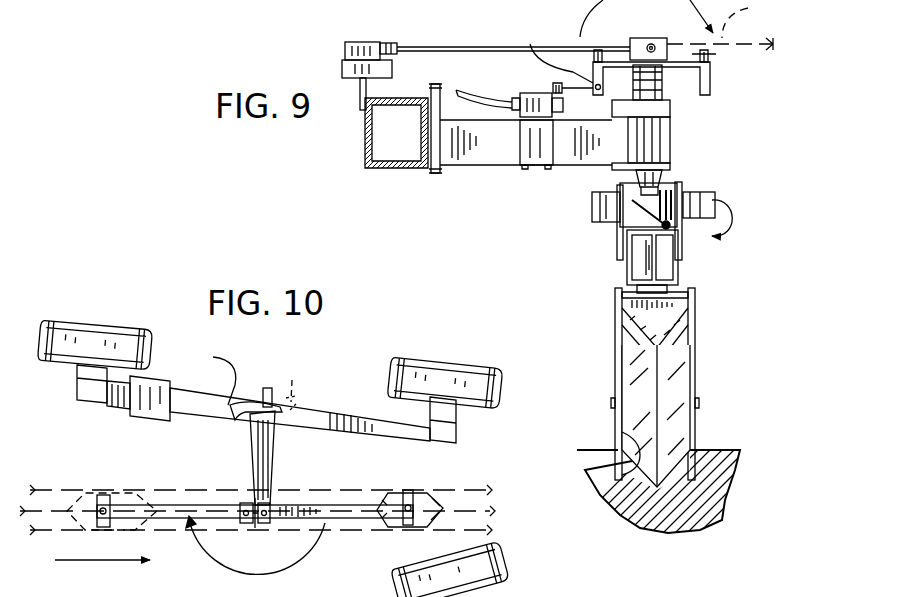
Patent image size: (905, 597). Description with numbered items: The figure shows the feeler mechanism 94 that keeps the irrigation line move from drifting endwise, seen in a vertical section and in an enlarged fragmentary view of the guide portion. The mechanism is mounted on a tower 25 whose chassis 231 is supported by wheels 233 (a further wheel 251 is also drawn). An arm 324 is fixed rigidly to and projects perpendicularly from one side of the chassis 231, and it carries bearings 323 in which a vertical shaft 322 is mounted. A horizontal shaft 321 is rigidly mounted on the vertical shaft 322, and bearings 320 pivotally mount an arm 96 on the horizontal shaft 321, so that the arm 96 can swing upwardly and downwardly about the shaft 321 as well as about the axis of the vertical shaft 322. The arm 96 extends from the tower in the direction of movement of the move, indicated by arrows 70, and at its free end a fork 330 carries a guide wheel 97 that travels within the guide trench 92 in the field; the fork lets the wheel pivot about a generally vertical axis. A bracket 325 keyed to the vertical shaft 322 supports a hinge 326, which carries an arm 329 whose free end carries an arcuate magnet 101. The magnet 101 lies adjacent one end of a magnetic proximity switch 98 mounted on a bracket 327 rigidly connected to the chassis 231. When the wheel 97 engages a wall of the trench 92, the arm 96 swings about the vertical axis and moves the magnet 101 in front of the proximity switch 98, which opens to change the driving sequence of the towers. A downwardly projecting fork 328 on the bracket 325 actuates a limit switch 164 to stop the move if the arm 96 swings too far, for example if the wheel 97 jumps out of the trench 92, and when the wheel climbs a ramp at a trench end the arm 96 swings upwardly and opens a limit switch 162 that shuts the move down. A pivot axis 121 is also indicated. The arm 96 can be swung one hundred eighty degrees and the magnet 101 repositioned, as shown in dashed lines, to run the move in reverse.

In FIG. 9, the tower 25 is at (360, 143).
In FIG. 10, the tower 25 is at (102, 412).
In FIG. 10, the arrows 70 is at (100, 560).
In FIG. 9, the guide trench 92 is at (628, 438).
In FIG. 10, the guide trench 92 is at (45, 535).
In FIG. 9, the feeler mechanism 94 is at (704, 274).
In FIG. 10, the feeler mechanism 94 is at (275, 465).
In FIG. 9, the arm 96 is at (680, 276).
In FIG. 10, the arm 96 is at (155, 530).
In FIG. 9, the guide wheel 97 is at (680, 442).
In FIG. 10, the guide wheel 97 is at (90, 495).
In FIG. 9, the magnetic proximity switch 98 is at (350, 42).
In FIG. 10, the magnetic proximity switch 98 is at (268, 388).
In FIG. 9, the arcuate magnet 101 is at (392, 43).
In FIG. 10, the arcuate magnet 101 is at (254, 376).
In FIG. 9, the pivot axis 121 is at (757, 19).
In FIG. 9, the limit switch 162 is at (635, 190).
In FIG. 9, the limit switch 164 is at (530, 93).
In FIG. 9, the chassis 231 is at (386, 170).
In FIG. 10, the chassis 231 is at (326, 402).
In FIG. 10, the wheels 233 is at (95, 325).
In FIG. 10, the wheel 251 is at (398, 588).
In FIG. 9, the bearings 320 is at (700, 192).
In FIG. 9, the horizontal shaft 321 is at (617, 210).
In FIG. 9, the vertical shaft 322 is at (662, 185).
In FIG. 9, the bearings 323 is at (670, 92).
In FIG. 9, the arm 324 is at (490, 166).
In FIG. 9, the bracket 325 is at (703, 80).
In FIG. 9, the hinge 326 is at (651, 38).
In FIG. 10, the hinge 326 is at (245, 525).
In FIG. 9, the bracket 327 is at (360, 90).
In FIG. 9, the fork 328 is at (528, 44).
In FIG. 9, the arm 329 is at (466, 47).
In FIG. 10, the arm 329 is at (247, 507).
In FIG. 9, the fork 330 is at (616, 305).
In FIG. 10, the fork 330 is at (407, 490).